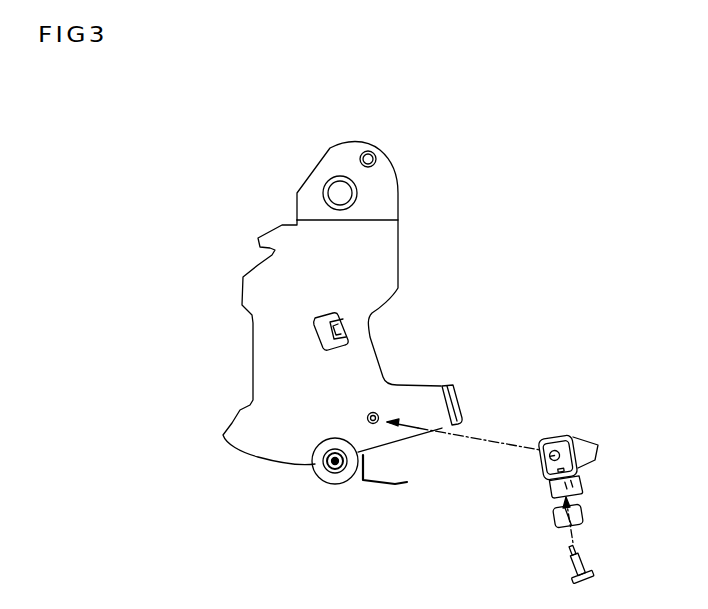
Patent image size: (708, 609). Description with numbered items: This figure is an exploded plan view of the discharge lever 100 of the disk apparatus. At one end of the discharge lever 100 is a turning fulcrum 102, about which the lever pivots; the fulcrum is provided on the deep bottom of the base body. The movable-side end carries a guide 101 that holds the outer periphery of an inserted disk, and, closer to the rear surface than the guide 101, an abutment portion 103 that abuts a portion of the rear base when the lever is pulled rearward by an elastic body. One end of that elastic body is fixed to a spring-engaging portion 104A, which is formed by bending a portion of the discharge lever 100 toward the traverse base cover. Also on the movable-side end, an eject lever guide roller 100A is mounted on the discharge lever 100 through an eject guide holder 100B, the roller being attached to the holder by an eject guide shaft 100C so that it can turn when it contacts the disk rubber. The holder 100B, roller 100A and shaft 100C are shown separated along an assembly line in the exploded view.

The discharge lever 100 is at (383, 252).
The guide 101 is at (333, 463).
The turning fulcrum 102 is at (337, 188).
The abutment portion 103 is at (458, 402).
The spring-engaging portion 104A is at (340, 323).
The eject lever guide roller 100A is at (591, 507).
The eject guide holder 100B is at (575, 437).
The eject guide shaft 100C is at (588, 562).